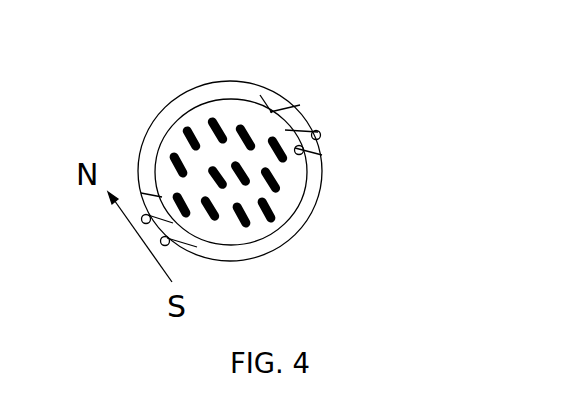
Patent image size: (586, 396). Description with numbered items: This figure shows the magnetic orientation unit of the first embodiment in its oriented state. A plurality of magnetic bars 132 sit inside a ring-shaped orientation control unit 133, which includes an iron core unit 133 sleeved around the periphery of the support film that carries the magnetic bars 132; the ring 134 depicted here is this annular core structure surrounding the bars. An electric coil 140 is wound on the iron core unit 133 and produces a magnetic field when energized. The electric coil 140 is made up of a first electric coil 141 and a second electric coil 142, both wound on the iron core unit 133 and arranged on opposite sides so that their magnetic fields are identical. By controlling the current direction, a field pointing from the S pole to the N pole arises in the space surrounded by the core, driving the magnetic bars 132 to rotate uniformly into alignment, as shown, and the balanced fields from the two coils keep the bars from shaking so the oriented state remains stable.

The magnetic bars 132 is at (207, 140).
The orientation control unit 133 is at (322, 162).
The annular ring 134 is at (240, 89).
The electric coil 140 is at (285, 189).
The first electric coil 141 is at (298, 106).
The second electric coil 142 is at (185, 243).